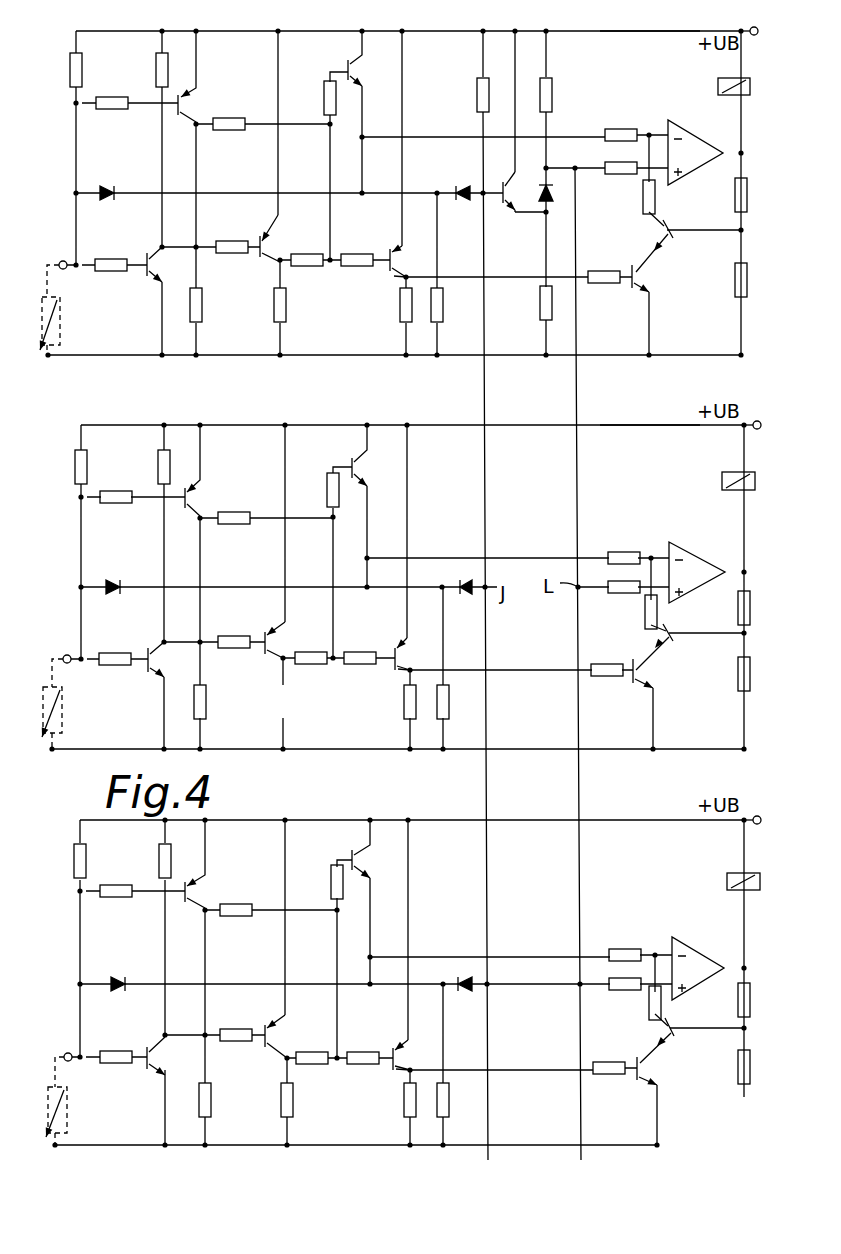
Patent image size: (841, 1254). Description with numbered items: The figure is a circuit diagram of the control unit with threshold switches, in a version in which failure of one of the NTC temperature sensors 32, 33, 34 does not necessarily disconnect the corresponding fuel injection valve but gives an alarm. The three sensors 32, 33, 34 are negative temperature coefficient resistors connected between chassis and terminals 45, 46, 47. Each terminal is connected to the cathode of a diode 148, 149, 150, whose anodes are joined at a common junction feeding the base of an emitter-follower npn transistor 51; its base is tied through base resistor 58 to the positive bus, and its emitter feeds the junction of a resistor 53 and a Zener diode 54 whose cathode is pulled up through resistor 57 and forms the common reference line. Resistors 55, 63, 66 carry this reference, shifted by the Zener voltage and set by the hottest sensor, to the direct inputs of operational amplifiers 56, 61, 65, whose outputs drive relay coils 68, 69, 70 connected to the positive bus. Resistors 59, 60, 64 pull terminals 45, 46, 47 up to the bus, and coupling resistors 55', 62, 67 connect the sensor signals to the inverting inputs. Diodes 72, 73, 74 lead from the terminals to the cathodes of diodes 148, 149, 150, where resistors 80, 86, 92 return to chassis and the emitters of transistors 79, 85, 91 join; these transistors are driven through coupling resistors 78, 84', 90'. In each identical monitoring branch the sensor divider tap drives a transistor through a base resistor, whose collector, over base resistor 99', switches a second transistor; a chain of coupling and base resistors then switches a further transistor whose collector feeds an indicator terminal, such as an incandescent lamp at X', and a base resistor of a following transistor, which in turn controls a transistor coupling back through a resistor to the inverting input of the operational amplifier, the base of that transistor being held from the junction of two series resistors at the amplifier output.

The temperature sensor 32 is at (56, 320).
The temperature sensor 33 is at (62, 726).
The temperature sensor 34 is at (66, 1115).
The terminal 45 is at (60, 261).
The terminal 46 is at (66, 655).
The terminal 47 is at (67, 1052).
The transistor 51 is at (506, 206).
The resistor 53 is at (540, 300).
The Zener diode 54 is at (549, 200).
The resistor 55 is at (621, 179).
The coupling resistor 55' is at (626, 116).
The operational amplifier 56 is at (688, 162).
The resistor 57 is at (551, 100).
The base resistor 58 is at (477, 97).
The resistor 59 is at (83, 66).
The resistor 60 is at (85, 472).
The operational amplifier 61 is at (694, 580).
The coupling resistor 62 is at (622, 550).
The resistor 63 is at (621, 596).
The resistor 64 is at (85, 862).
The operational amplifier 65 is at (691, 955).
The resistor 66 is at (622, 990).
The coupling resistor 67 is at (622, 950).
The relay coil 68 is at (720, 84).
The relay coil 69 is at (721, 478).
The relay coil 70 is at (727, 880).
The diode 72 is at (108, 191).
The diode 73 is at (114, 586).
The diode 74 is at (116, 980).
The collector coupling resistor 78 is at (334, 110).
The transistor 79 is at (352, 65).
The emitter resistor 80 is at (449, 297).
The coupling resistor 84' is at (347, 490).
The transistor 85 is at (356, 466).
The resistor 86 is at (446, 712).
The coupling resistor 90' is at (352, 887).
The transistor 91 is at (357, 858).
The resistor 92 is at (447, 1105).
The base resistor 99' is at (234, 223).
The diode 148 is at (462, 186).
The diode 149 is at (466, 596).
The diode 150 is at (468, 993).
The terminal X' is at (389, 683).